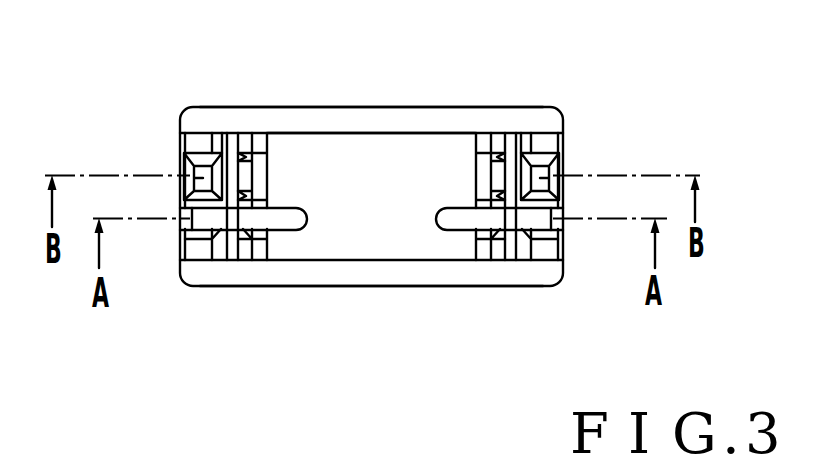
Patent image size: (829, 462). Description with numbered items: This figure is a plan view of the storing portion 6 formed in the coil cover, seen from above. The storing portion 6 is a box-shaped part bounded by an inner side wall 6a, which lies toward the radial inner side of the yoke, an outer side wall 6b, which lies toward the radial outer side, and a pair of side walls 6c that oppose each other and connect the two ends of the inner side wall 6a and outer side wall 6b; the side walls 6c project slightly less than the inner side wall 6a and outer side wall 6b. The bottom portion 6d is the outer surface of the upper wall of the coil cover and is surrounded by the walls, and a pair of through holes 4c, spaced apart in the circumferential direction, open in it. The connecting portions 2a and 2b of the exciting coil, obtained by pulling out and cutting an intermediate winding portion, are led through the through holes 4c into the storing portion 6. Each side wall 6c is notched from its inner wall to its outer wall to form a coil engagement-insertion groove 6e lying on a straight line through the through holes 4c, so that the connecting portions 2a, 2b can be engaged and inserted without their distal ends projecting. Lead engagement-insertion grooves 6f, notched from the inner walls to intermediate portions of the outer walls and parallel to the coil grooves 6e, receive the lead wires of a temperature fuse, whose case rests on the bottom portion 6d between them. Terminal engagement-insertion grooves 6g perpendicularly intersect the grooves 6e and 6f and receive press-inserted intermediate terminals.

The storing portion 6 is at (560, 97).
The inner side wall 6a is at (397, 122).
The outer side wall 6b is at (375, 275).
The side walls 6c is at (190, 146).
The bottom portion 6d is at (323, 140).
The coil engagement-insertion grooves 6e is at (186, 222).
The lead engagement-insertion grooves 6f is at (186, 170).
The terminal engagement-insertion grooves 6g is at (233, 140).
The connecting portion 2a is at (287, 217).
The connecting portion 2b is at (456, 215).
The through holes 4c is at (285, 252).